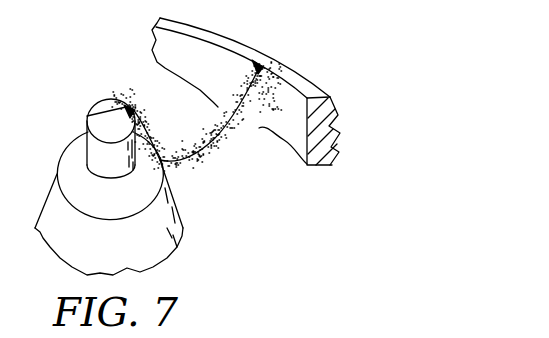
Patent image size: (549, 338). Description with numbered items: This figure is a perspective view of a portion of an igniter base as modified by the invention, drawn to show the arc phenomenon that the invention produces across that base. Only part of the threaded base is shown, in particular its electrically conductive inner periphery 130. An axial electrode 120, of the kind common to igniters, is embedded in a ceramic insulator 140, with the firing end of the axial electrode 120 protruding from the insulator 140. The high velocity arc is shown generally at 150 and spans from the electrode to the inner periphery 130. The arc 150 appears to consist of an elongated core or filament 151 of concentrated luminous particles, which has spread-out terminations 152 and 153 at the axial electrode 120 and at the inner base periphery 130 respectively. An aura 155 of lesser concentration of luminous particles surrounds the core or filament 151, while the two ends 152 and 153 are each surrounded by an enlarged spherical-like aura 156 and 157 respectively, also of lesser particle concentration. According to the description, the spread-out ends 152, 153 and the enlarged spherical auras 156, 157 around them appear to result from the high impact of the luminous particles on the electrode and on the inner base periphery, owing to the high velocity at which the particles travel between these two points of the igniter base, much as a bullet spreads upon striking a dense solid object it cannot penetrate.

The axial electrode 120 is at (115, 165).
The electrically conductive inner periphery 130 is at (246, 91).
The ceramic insulator 140 is at (110, 249).
The high velocity arc 150 is at (169, 142).
The core or filament 151 is at (223, 142).
The spread-out termination 152 is at (88, 115).
The spread-out termination 153 is at (257, 61).
The aura of luminous particles 155 is at (217, 119).
The spherical-like aura 156 is at (122, 88).
The spherical-like aura 157 is at (230, 67).